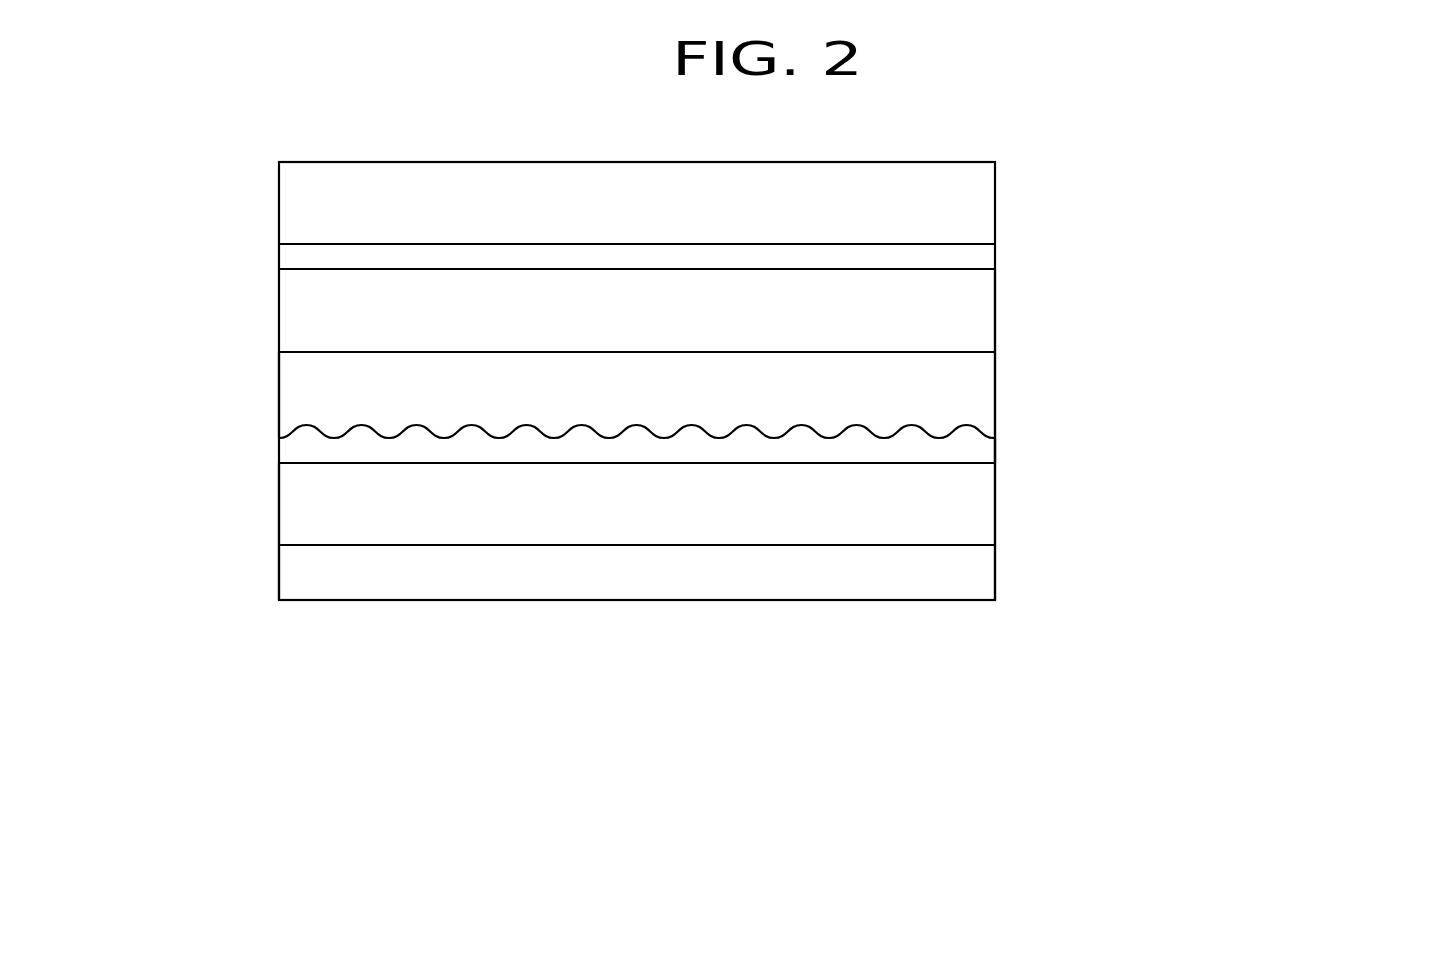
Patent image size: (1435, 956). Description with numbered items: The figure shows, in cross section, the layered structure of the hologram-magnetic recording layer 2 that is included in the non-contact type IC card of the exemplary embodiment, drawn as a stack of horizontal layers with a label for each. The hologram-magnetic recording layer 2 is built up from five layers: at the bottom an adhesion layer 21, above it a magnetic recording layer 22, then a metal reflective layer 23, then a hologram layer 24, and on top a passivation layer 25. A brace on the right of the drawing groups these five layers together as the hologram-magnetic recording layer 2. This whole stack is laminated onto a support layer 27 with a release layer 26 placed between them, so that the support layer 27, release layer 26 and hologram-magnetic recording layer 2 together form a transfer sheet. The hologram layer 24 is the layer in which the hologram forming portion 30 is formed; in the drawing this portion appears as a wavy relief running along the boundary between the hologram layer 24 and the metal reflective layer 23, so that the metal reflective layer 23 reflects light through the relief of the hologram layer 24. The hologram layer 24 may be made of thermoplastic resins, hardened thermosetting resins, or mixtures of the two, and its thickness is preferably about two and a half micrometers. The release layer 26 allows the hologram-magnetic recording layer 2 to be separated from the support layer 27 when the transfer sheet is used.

The support layer 27 is at (975, 202).
The release layer 26 is at (975, 261).
The passivation layer 25 is at (975, 324).
The hologram layer 24 is at (975, 390).
The metal reflective layer 23 is at (975, 453).
The magnetic recording layer 22 is at (975, 512).
The adhesion layer 21 is at (975, 582).
The hologram forming portion 30 is at (305, 426).
The hologram-magnetic recording layer 2 is at (1255, 275).